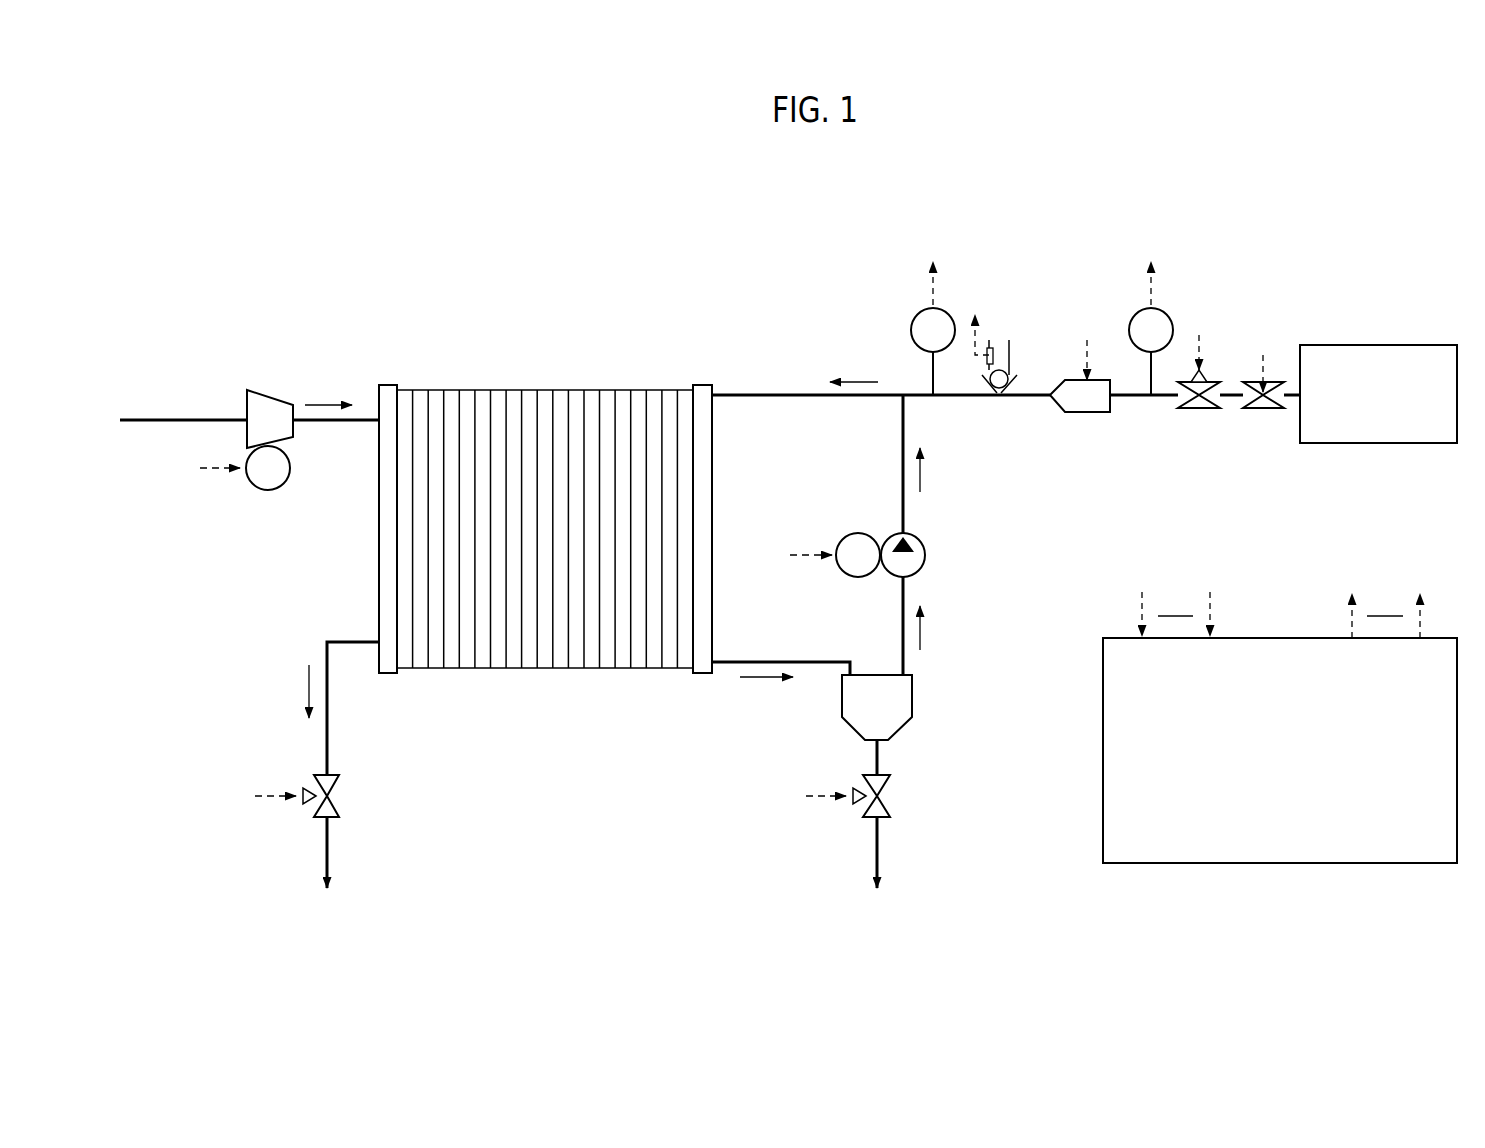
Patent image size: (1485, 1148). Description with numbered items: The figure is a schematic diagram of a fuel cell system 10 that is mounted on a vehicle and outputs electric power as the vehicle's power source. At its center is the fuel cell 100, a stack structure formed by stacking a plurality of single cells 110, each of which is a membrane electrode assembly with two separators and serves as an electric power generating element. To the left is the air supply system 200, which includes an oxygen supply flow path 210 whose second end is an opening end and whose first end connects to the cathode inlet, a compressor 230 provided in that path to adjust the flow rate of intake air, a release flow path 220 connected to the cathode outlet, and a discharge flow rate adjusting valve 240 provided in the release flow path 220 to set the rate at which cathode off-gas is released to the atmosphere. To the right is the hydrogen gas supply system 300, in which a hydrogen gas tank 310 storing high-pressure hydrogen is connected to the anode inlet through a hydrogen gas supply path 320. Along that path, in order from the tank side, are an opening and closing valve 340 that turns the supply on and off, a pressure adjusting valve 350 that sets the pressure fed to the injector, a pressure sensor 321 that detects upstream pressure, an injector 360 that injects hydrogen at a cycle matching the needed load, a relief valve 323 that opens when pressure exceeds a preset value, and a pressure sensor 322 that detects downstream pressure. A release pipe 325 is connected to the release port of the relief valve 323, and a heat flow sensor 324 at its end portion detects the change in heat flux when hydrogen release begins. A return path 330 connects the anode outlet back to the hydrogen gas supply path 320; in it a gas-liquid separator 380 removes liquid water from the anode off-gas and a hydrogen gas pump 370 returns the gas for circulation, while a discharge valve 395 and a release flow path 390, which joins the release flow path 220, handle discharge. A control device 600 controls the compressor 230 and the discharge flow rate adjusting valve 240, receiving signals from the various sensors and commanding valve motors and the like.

The fuel cell system 10 is at (160, 240).
The fuel cell 100 is at (636, 359).
The single cell 110 is at (578, 388).
The air supply system 200 is at (241, 349).
The oxygen supply flow path 210 is at (158, 418).
The release flow path 220 is at (325, 842).
The compressor 230 is at (268, 397).
The discharge flow rate adjusting valve 240 is at (316, 776).
The hydrogen gas supply system 300 is at (1337, 299).
The hydrogen gas tank 310 is at (1378, 345).
The hydrogen gas supply path 320 is at (777, 394).
The pressure sensor 321 is at (1165, 308).
The pressure sensor 322 is at (925, 308).
The relief valve 323 is at (1012, 370).
The heat flow sensor 324 is at (989, 340).
The release pipe 325 is at (1010, 340).
The return path 330 is at (778, 661).
The opening and closing valve 340 is at (1285, 385).
The pressure adjusting valve 350 is at (1222, 385).
The injector 360 is at (1098, 380).
The hydrogen gas pump 370 is at (891, 533).
The gas-liquid separator 380 is at (914, 698).
The release flow path 390 is at (880, 842).
The discharge valve 395 is at (882, 773).
The control device 600 is at (1368, 863).